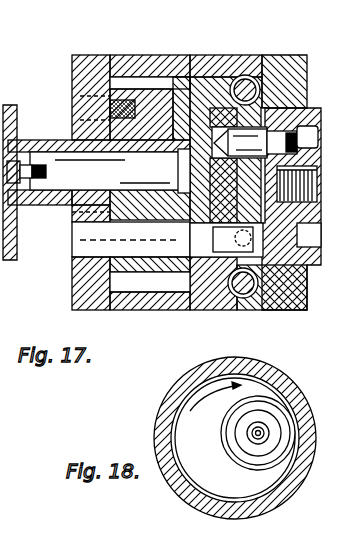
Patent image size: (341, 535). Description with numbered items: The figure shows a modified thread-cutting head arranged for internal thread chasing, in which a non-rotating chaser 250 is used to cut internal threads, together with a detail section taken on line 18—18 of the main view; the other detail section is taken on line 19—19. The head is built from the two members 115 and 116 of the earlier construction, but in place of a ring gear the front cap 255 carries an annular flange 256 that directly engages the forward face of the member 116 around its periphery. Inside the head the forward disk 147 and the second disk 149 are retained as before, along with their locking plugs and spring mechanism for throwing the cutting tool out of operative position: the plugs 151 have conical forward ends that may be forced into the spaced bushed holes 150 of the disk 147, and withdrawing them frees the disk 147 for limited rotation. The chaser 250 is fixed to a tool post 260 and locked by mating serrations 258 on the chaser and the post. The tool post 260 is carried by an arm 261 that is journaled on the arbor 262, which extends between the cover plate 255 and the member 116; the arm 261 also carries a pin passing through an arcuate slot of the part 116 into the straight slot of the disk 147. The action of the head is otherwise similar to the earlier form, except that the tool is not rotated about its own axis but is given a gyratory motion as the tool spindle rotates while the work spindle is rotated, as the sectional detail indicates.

In FIG. 17, the section line 18— 18 is at (8, 105).
In FIG. 17, the section line 19— 19 is at (135, 45).
In FIG. 17, the head member 115 is at (300, 306).
In FIG. 17, the head member 116 is at (258, 308).
In FIG. 17, the forward disk 147 is at (215, 262).
In FIG. 17, the second disk 149 is at (262, 108).
In FIG. 17, the bushed holes 150 is at (213, 135).
In FIG. 17, the plugs 151 is at (288, 141).
In FIG. 17, the non-rotating chaser 250 is at (18, 136).
In FIG. 18, the non-rotating chaser 250 is at (241, 440).
In FIG. 17, the front cap 255 is at (80, 72).
In FIG. 17, the annular flange 256 is at (198, 63).
In FIG. 17, the mating serrations 258 is at (64, 140).
In FIG. 17, the tool post 260 is at (98, 171).
In FIG. 17, the arm 261 is at (72, 218).
In FIG. 17, the arbor 262 is at (82, 238).